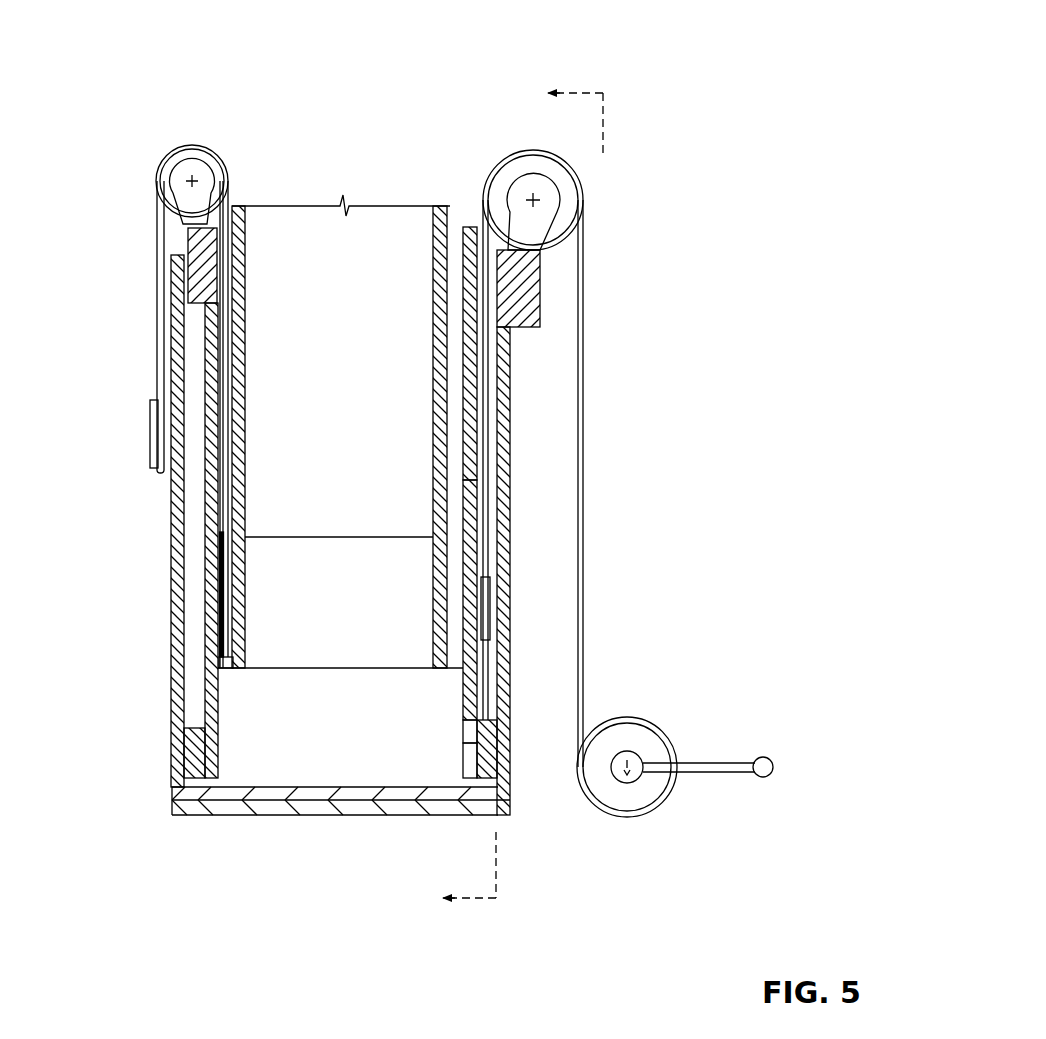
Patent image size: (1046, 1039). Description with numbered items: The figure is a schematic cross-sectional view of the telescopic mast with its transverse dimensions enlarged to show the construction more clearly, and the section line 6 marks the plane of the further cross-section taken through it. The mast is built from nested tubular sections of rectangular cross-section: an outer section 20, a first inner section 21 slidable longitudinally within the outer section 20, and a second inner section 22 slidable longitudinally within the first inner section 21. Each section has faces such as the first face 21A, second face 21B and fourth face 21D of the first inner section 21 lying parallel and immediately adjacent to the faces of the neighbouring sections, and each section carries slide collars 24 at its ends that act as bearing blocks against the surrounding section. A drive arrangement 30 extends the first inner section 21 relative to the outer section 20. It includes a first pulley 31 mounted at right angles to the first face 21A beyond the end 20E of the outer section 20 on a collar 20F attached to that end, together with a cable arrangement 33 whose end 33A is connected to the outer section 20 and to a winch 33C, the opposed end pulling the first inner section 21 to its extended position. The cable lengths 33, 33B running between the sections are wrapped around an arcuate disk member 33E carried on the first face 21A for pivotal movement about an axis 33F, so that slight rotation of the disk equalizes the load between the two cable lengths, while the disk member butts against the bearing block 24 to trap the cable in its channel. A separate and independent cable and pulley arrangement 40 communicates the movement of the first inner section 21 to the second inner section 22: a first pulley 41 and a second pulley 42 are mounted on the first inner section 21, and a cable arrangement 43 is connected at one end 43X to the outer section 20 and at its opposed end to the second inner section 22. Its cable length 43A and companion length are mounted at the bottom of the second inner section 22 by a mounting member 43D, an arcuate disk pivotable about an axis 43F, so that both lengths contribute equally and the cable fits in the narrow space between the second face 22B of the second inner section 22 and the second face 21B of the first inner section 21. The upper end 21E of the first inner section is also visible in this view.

The section line 6- 6 is at (510, 496).
The outer section 20 is at (173, 598).
The end of the outer section 20E is at (484, 227).
The collar 20F is at (528, 327).
The first inner section 21 is at (203, 537).
The first face of the first inner section 21A is at (478, 480).
The second face of the first inner section 21B is at (212, 357).
The fourth face of the first inner section 21D is at (365, 359).
The cylinder upper end 21E is at (473, 228).
The second inner section 22 is at (225, 475).
The second face of the second inner section 22B is at (245, 483).
The slide collar 24 is at (484, 757).
The drive arrangement 30 is at (599, 196).
The first pulley 31 is at (584, 188).
The cable arrangement 33 is at (490, 536).
The end of the cable arrangement 33A is at (586, 668).
The carriage guide 33B is at (483, 577).
The arcuate disk member 33E is at (497, 613).
The axis 33F is at (483, 640).
The winch 33C is at (693, 763).
The cable and pulley arrangement 40 is at (223, 391).
The first pulley 41 is at (202, 148).
The second pulley 42 is at (192, 191).
The cable arrangement 43 is at (157, 225).
The cable length 43A is at (228, 411).
The mounting member 43D is at (232, 578).
The axis 43F is at (232, 588).
The end of the cable arrangement 43X is at (150, 437).